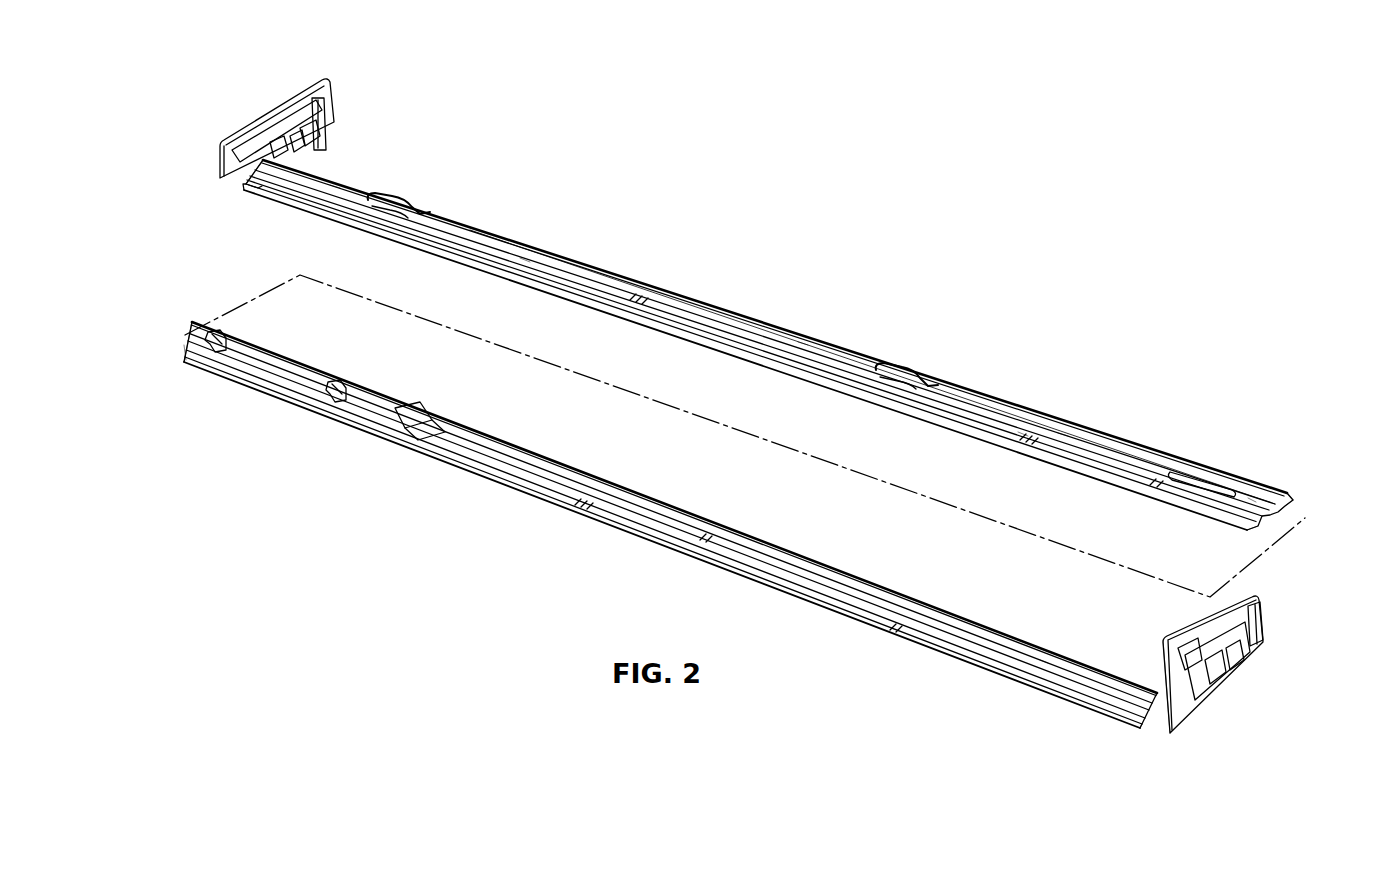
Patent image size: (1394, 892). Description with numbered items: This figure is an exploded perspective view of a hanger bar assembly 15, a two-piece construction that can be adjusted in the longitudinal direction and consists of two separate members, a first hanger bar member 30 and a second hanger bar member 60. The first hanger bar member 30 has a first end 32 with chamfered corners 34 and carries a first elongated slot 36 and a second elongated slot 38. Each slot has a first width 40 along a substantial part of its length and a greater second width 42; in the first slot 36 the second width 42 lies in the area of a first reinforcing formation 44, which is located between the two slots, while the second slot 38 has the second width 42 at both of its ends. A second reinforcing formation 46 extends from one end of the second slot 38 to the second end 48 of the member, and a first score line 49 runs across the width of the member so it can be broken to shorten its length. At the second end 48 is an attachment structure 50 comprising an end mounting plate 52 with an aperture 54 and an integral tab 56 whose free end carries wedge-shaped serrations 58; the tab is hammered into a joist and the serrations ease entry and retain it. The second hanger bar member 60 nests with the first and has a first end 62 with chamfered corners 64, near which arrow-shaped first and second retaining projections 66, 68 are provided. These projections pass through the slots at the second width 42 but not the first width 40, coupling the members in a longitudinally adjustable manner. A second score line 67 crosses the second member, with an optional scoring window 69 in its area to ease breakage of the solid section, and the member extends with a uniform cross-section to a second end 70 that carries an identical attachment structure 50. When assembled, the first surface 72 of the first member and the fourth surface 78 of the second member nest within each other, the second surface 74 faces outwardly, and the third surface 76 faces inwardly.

The hanger bar assembly 15 is at (947, 133).
The first hanger bar member 30 is at (695, 265).
The first end 32 is at (1296, 486).
The chamfered corners 34 is at (1262, 522).
The first elongated slot 36 is at (1060, 433).
The second elongated slot 38 is at (522, 257).
The first width 40 is at (452, 303).
The second width 42 is at (392, 196).
The first reinforcing formation 44 is at (800, 343).
The second reinforcing formation 46 is at (328, 185).
The second end 48 is at (238, 200).
The first score line 49 is at (1020, 433).
The attachment structure 50 is at (342, 86).
The end mounting plate 52 is at (320, 96).
The aperture 54 is at (300, 126).
The tab 56 is at (340, 116).
The wedge-shaped serrations 58 is at (260, 143).
The second hanger bar member 60 is at (608, 534).
The first end 62 is at (188, 335).
The chamfered corners 64 is at (187, 348).
The first retaining projection 66 is at (220, 340).
The second score line 67 is at (403, 428).
The second retaining projection 68 is at (333, 387).
The scoring window 69 is at (425, 432).
The second end 70 is at (1160, 748).
The first surface 72 is at (1282, 513).
The second surface 74 is at (1250, 500).
The third surface 76 is at (1157, 718).
The fourth surface 78 is at (1041, 664).